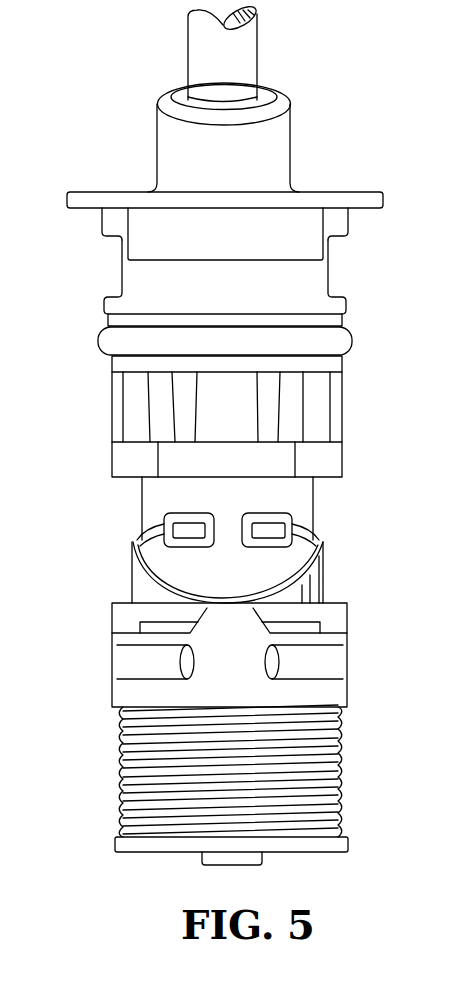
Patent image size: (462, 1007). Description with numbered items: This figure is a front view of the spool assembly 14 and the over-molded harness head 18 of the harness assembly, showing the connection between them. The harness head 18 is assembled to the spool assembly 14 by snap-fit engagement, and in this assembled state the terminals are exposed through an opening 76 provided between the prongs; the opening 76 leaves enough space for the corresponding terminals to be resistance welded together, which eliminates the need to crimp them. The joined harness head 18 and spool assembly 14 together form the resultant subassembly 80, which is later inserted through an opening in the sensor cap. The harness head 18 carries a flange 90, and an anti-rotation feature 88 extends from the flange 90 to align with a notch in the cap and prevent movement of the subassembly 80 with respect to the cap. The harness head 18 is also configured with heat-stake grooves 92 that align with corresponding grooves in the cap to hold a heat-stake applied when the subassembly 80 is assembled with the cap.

The spool assembly 14 is at (112, 648).
The harness head 18 is at (292, 143).
The opening 76 is at (295, 405).
The subassembly 80 is at (71, 808).
The anti-rotation feature 88 is at (140, 227).
The flange 90 is at (385, 200).
The heat-stake groove 92 is at (122, 270).